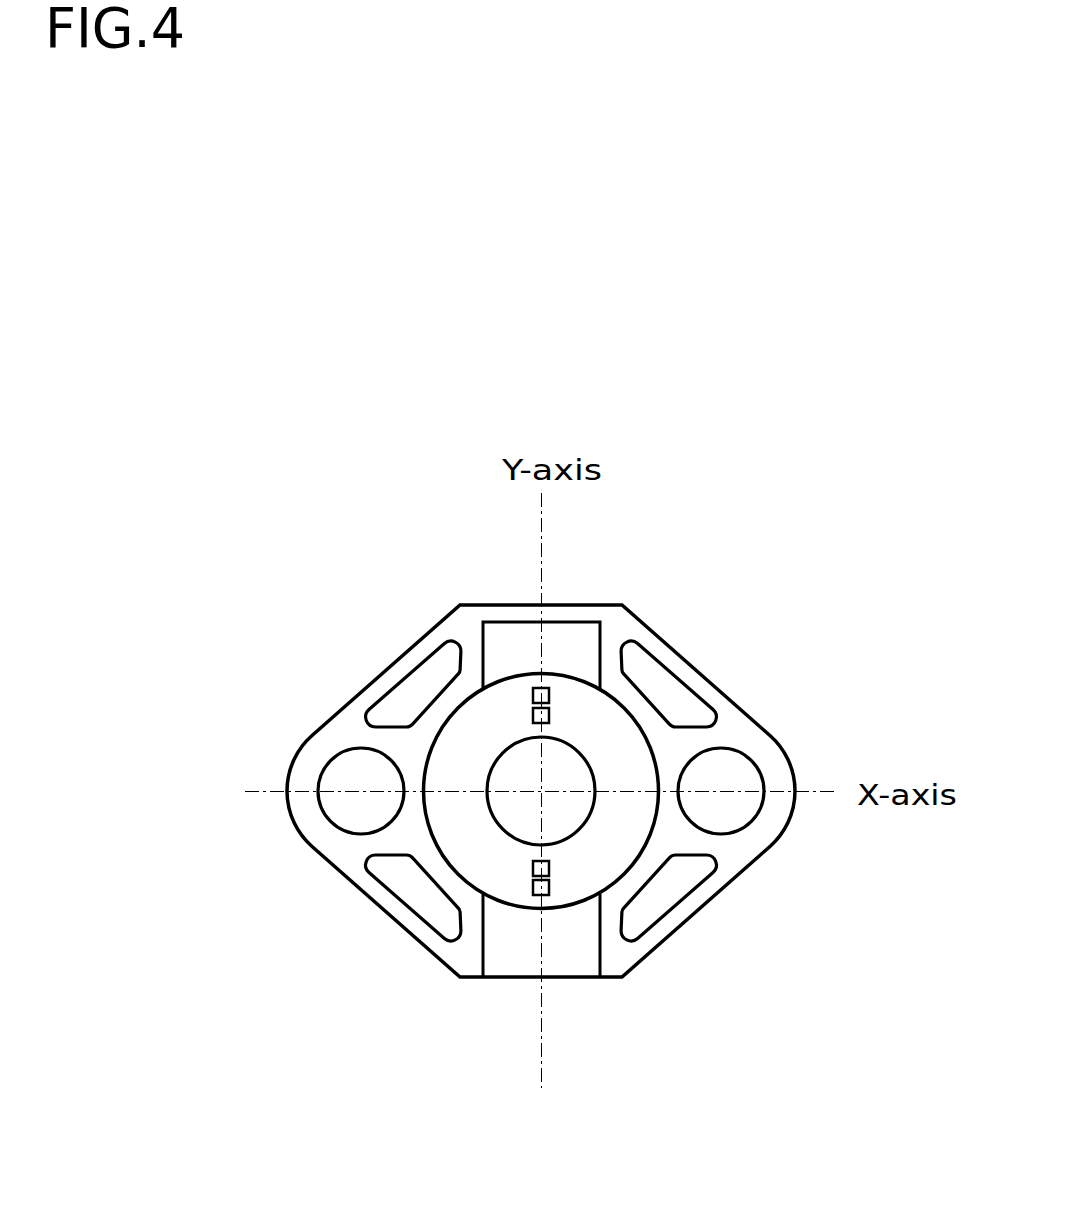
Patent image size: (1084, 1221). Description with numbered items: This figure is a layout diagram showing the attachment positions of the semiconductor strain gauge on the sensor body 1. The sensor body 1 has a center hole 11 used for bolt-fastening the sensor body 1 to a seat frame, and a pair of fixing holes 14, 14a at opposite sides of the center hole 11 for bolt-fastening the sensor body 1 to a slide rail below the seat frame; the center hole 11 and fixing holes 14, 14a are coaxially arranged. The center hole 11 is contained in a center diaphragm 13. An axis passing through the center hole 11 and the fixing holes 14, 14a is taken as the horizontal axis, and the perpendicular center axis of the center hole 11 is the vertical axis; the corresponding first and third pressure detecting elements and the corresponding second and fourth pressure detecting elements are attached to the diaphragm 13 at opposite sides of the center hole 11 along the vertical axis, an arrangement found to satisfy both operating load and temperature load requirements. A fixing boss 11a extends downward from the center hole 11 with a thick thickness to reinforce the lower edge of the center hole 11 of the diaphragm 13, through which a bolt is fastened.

The sensor body 1 is at (672, 946).
The center hole 11 is at (570, 787).
The fixing boss 11a is at (518, 845).
The center diaphragm 13 is at (455, 842).
The fixing hole 14 is at (343, 777).
The fixing hole 14a is at (730, 770).